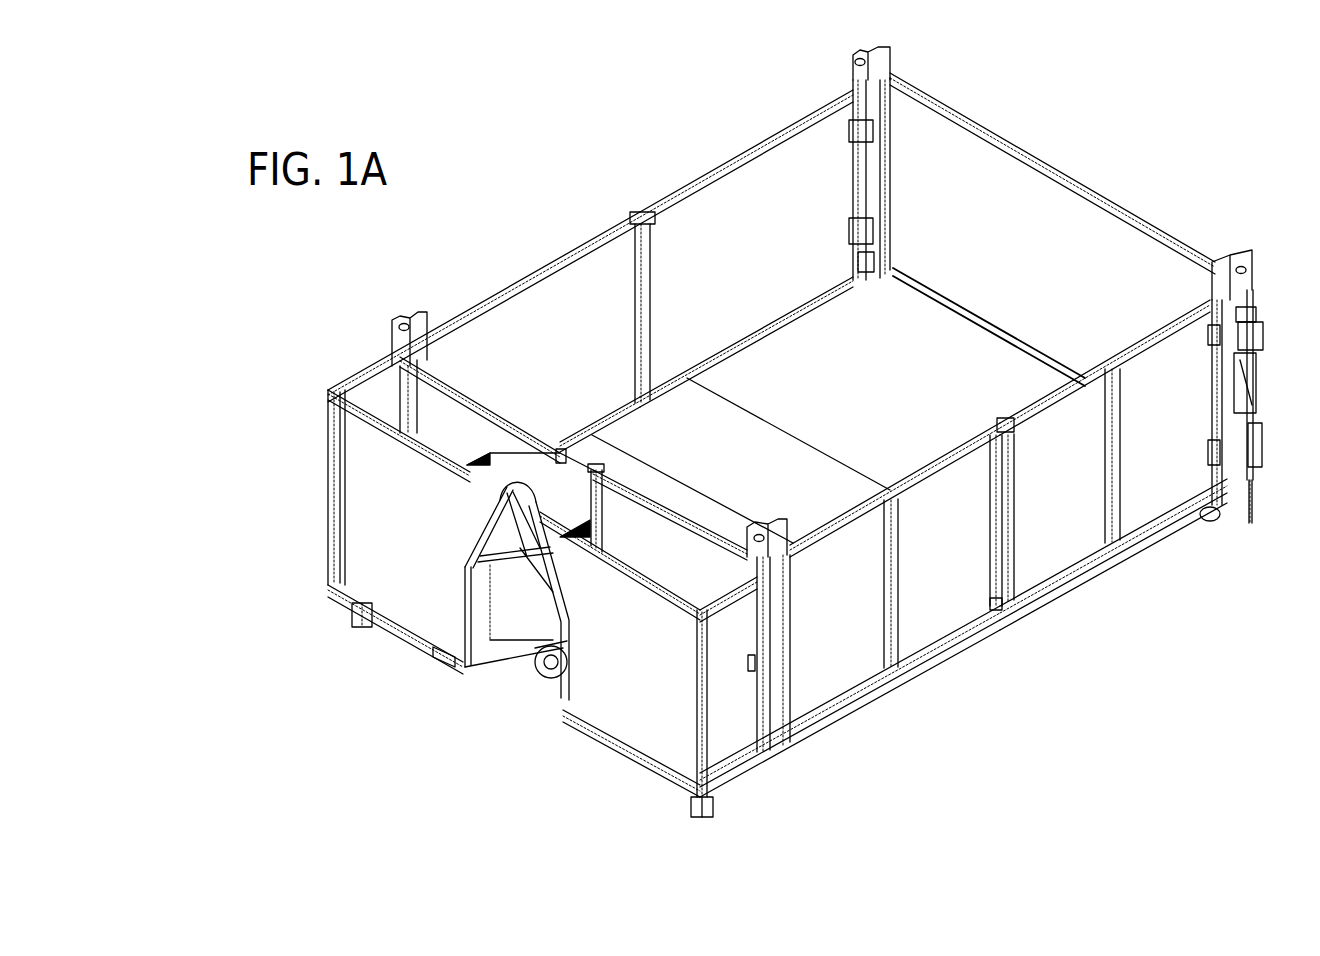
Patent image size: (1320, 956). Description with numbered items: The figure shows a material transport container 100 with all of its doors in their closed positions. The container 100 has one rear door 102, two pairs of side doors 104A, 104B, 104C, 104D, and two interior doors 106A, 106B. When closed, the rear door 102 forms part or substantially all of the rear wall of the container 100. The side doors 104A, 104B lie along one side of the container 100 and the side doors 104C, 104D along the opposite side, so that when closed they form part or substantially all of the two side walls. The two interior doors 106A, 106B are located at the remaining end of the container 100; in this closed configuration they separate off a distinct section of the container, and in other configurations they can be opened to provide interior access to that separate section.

The material transport container 100 is at (362, 673).
The rear door 102 is at (1062, 241).
The side door 104A is at (542, 343).
The side door 104B is at (741, 243).
The side door 104C is at (1071, 505).
The side door 104D is at (943, 568).
The interior door 106A is at (460, 423).
The interior door 106B is at (633, 530).